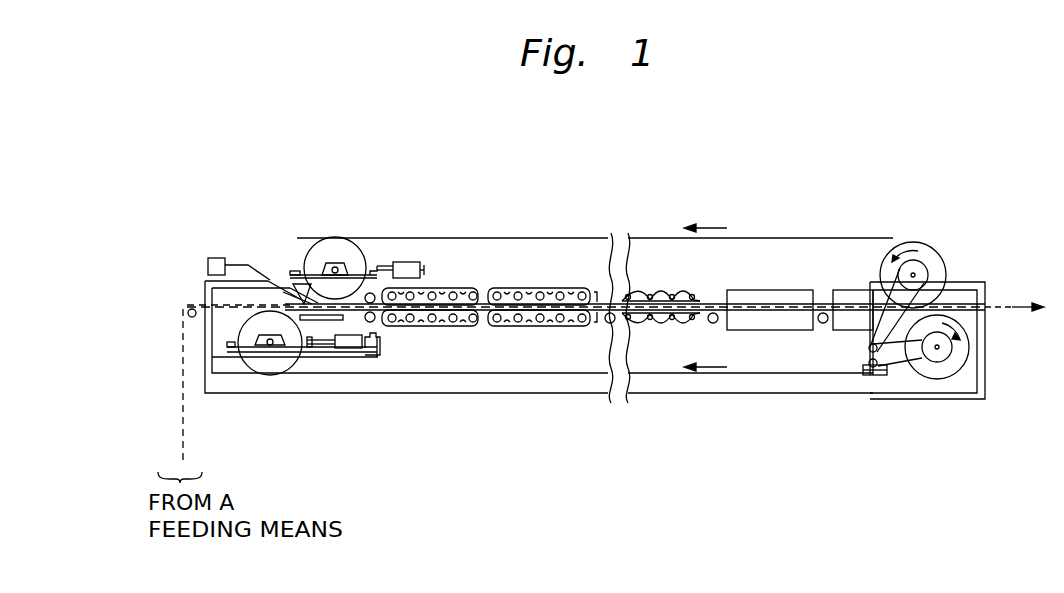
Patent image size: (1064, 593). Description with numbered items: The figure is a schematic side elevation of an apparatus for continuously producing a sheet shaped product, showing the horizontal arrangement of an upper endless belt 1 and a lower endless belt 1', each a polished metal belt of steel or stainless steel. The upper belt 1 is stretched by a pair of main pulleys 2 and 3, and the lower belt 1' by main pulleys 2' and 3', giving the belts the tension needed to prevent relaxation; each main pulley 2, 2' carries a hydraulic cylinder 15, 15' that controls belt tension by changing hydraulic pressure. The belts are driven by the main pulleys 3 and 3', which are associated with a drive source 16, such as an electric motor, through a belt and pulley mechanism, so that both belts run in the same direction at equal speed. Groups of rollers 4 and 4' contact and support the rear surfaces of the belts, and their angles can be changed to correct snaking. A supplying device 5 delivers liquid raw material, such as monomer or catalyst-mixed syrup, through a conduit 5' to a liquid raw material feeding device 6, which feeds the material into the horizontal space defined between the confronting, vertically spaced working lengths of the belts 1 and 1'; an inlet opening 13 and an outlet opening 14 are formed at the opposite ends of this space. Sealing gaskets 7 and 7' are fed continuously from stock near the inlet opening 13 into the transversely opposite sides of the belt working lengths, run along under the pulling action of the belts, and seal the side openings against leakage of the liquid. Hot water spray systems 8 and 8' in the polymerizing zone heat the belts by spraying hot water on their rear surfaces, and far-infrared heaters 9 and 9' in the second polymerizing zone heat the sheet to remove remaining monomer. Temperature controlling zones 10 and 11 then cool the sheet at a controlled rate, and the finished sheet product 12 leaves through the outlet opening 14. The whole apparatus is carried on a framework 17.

The upper endless belt 1 is at (549, 247).
The lower endless belt 1' is at (539, 358).
The main pulley 2 is at (333, 251).
The main pulley 2' is at (295, 374).
The main pulley 3 is at (913, 250).
The main pulley 3' is at (937, 379).
The group of rollers 4 is at (435, 253).
The group of rollers 4' is at (430, 375).
The liquid raw material supplying device 5 is at (212, 231).
The conduit 5' is at (246, 243).
The liquid raw material feeding device 6 is at (312, 300).
The sealing gasket 7 is at (154, 396).
The sealing gasket 7' is at (233, 369).
The hot water spray system 8 is at (542, 253).
The hot water spray system 8' is at (542, 375).
The far-infrared heater 9 is at (661, 251).
The far-infrared heater 9' is at (661, 374).
The temperature controlling zone 10 is at (782, 292).
The temperature controlling zone 11 is at (847, 292).
The finished sheet product 12 is at (1012, 306).
The inlet opening 13 is at (330, 298).
The outlet opening 14 is at (935, 305).
The cylinder 15 is at (400, 239).
The cylinder 15' is at (343, 385).
The drive source 16 is at (863, 372).
The framework 17 is at (982, 360).